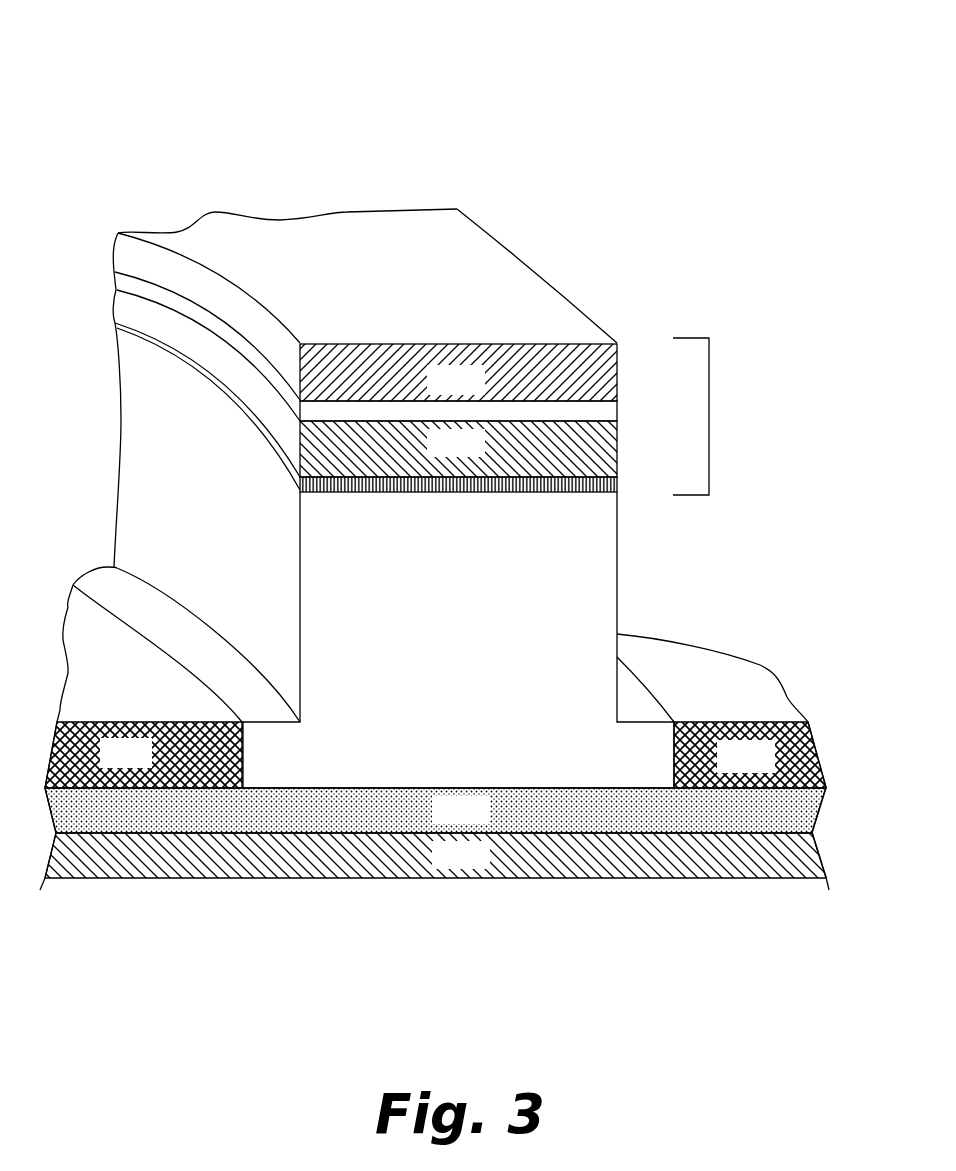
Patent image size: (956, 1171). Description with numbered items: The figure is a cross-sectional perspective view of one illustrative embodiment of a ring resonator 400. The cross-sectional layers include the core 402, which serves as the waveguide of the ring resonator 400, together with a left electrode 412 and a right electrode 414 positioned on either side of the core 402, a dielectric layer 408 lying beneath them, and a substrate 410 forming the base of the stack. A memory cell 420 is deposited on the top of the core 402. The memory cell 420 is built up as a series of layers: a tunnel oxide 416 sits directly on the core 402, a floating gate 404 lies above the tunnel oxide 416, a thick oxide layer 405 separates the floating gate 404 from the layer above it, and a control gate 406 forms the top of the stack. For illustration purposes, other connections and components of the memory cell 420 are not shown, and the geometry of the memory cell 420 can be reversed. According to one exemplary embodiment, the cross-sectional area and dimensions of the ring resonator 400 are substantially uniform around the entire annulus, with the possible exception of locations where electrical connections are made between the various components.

The ring resonator 400 is at (214, 93).
The core 402 is at (477, 631).
The floating gate 404 is at (476, 452).
The thick oxide layer 405 is at (600, 410).
The control gate 406 is at (476, 389).
The dielectric layer 408 is at (480, 821).
The substrate 410 is at (480, 866).
The left electrode 412 is at (147, 762).
The right electrode 414 is at (766, 766).
The tunnel oxide 416 is at (617, 484).
The memory cell 420 is at (710, 400).